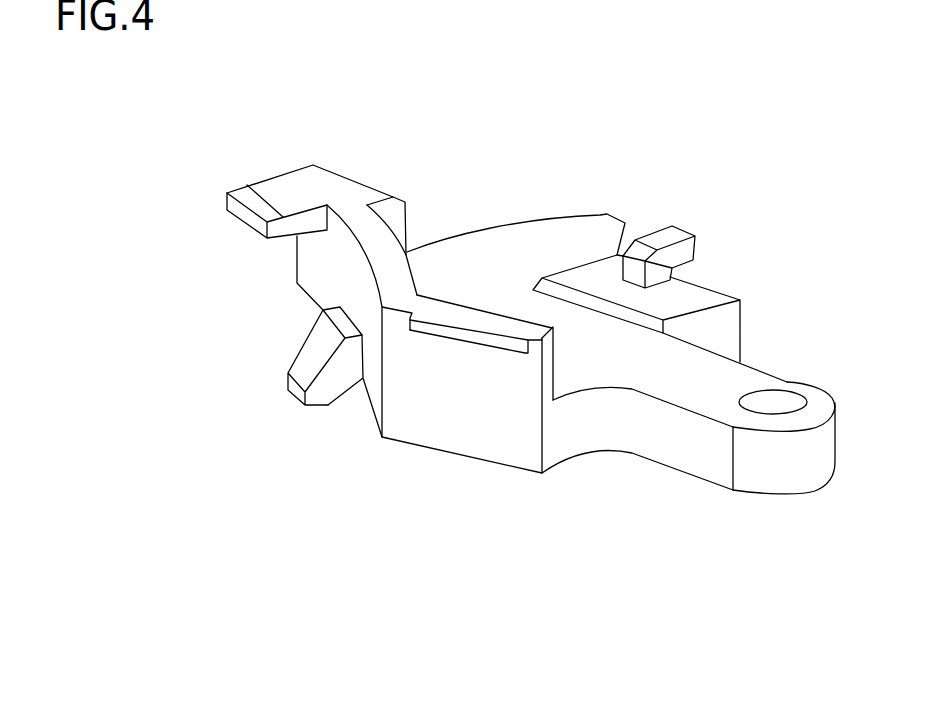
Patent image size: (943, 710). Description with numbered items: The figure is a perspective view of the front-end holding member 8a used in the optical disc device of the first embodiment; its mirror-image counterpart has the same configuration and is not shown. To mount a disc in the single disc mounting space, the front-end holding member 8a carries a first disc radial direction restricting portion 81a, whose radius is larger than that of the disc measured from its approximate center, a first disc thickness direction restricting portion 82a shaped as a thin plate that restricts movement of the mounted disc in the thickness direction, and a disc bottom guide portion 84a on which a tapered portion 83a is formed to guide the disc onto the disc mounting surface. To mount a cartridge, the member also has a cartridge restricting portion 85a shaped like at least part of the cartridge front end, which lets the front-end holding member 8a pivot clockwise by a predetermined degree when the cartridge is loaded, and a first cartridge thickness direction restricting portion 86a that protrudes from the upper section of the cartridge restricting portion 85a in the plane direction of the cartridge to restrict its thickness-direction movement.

The front-end holding member 8a is at (247, 113).
The first disc radial direction restricting portion 81a is at (323, 280).
The first disc thickness direction restricting portion 82a is at (228, 219).
The tapered portion 83a is at (310, 355).
The disc bottom guide portion 84a is at (332, 393).
The cartridge restricting portion 85a is at (418, 422).
The first cartridge thickness direction restricting portion 86a is at (490, 343).